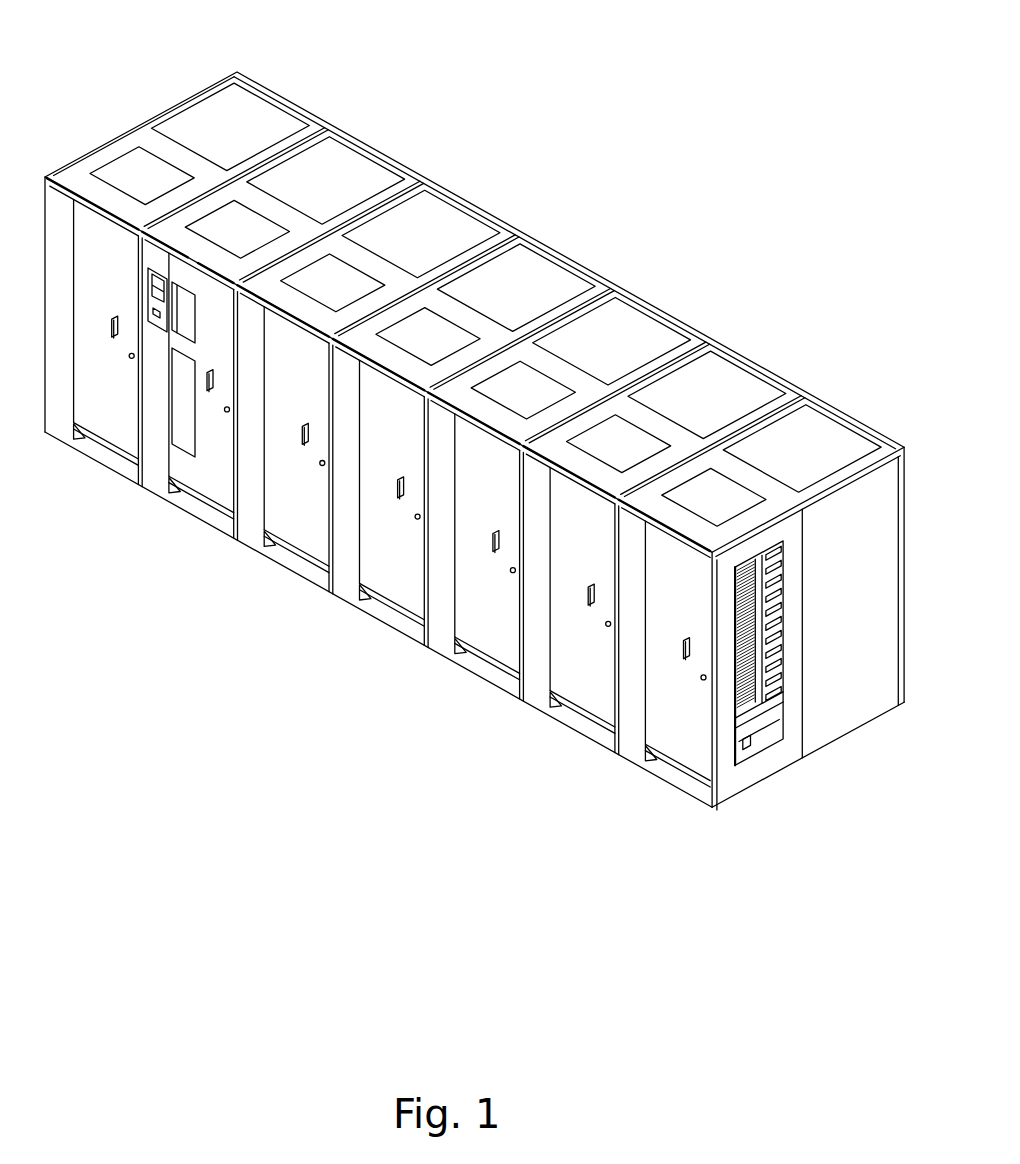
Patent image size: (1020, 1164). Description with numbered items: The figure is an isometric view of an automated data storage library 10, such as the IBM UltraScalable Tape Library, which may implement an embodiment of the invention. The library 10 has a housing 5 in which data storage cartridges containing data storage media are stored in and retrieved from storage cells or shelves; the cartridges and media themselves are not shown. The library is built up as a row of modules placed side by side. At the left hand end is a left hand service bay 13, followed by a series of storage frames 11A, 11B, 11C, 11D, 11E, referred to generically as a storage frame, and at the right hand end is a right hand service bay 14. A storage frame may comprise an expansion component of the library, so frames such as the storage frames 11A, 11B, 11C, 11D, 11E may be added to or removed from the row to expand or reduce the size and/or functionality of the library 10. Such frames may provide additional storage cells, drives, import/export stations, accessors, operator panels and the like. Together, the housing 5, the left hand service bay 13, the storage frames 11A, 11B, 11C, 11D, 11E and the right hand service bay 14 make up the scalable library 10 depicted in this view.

The automated data storage library 10 is at (333, 724).
The housing 5 is at (137, 122).
The left hand service bay 13 is at (279, 90).
The storage frame 11A is at (378, 140).
The storage frame 11B is at (475, 197).
The storage frame 11C is at (570, 245).
The storage frame 11D is at (665, 300).
The storage frame 11E is at (760, 352).
The right hand service bay 14 is at (855, 418).